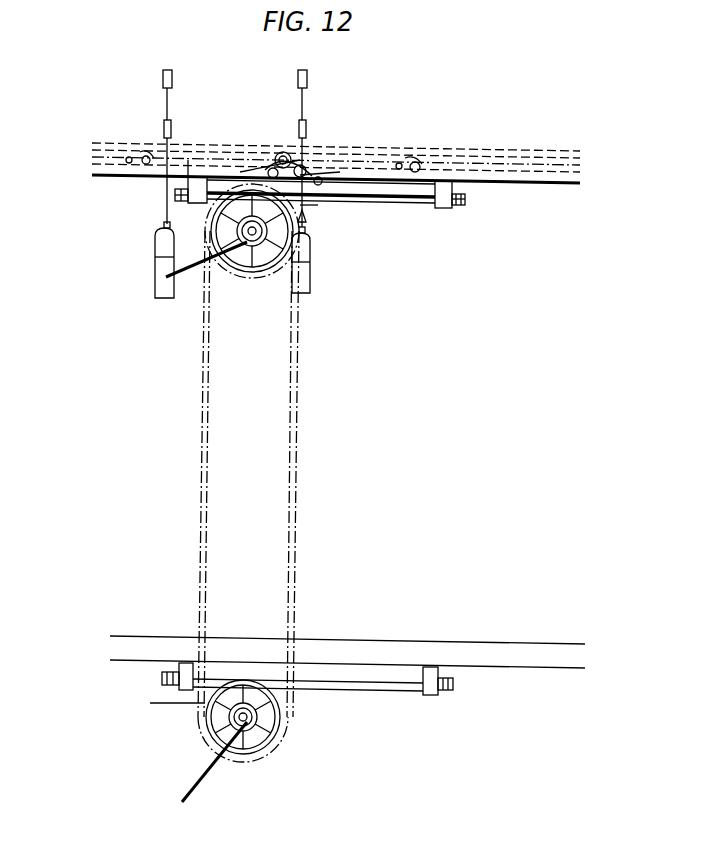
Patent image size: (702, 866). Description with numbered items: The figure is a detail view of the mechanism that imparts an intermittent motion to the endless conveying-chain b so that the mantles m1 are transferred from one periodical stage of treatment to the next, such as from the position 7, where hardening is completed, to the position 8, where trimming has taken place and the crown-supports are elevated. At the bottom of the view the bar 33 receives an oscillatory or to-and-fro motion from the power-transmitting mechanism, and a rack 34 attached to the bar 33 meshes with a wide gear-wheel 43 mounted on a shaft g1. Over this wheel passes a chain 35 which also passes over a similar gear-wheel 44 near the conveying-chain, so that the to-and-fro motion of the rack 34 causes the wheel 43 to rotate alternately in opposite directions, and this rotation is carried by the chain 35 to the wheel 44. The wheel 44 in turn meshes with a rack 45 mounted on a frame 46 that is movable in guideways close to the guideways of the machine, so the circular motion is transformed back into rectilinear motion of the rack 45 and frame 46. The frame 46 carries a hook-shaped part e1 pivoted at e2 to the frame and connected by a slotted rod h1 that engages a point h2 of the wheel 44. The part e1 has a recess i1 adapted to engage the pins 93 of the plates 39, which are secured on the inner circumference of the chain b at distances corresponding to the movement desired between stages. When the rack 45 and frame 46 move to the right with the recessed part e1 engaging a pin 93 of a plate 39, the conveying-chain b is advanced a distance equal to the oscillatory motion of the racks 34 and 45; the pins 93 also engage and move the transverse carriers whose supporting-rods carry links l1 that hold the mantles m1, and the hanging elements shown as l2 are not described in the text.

The conveying-chain b is at (92, 157).
The pins 93 is at (148, 155).
The plates 39 is at (143, 165).
The links l1 is at (165, 205).
The hanger rod l2 is at (305, 216).
The recess i1 is at (278, 152).
The hook-shaped part e1 is at (240, 172).
The pivot e2 is at (206, 253).
The slotted rod h1 is at (318, 173).
The point of wheel h2 is at (309, 206).
The rack 45 is at (378, 196).
The frame 46 is at (413, 196).
The gear-wheel 44 is at (266, 269).
The chain 35 is at (289, 441).
The position 7 is at (164, 272).
The position 8 is at (301, 271).
The mantles m1 is at (155, 257).
The bar 33 is at (366, 648).
The rack 34 is at (359, 685).
The gear-wheel 43 is at (281, 735).
The shaft g1 is at (245, 741).